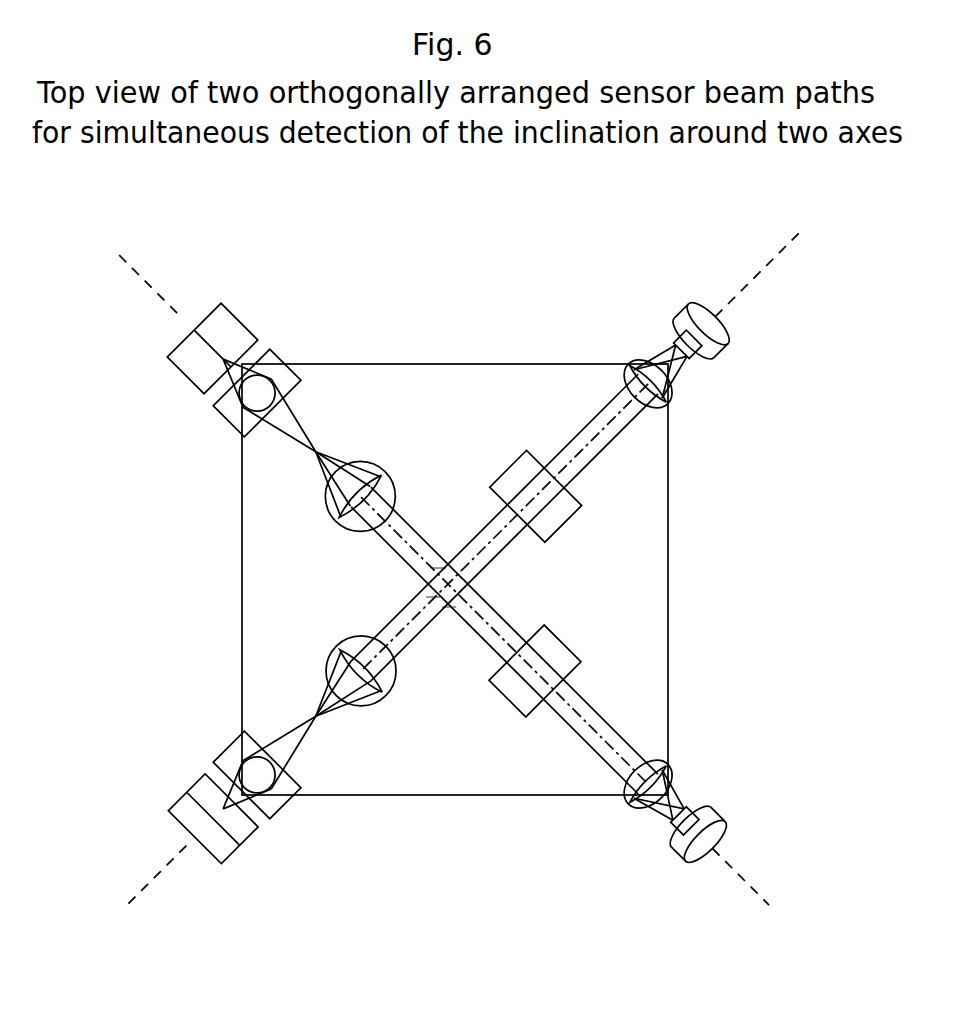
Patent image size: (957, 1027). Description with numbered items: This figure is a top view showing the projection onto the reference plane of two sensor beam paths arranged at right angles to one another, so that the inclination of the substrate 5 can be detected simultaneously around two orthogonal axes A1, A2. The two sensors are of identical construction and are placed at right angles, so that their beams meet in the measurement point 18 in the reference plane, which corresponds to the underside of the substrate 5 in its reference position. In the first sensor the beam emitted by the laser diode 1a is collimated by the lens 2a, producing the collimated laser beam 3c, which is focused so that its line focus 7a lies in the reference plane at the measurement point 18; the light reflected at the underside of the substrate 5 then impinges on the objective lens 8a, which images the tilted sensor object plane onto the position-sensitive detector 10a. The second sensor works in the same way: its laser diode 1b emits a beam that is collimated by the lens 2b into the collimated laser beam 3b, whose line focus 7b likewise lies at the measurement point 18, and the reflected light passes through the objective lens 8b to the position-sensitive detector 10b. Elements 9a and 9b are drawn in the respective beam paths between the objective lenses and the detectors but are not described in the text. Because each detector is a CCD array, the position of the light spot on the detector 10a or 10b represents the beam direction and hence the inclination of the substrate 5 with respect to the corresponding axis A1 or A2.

The laser diode 1a is at (699, 350).
The laser diode 1b is at (705, 816).
The lens 2a is at (661, 393).
The lens 2b is at (664, 784).
The collimated laser beam 3b is at (551, 670).
The collimated laser beam 3c is at (549, 502).
The substrate 5 is at (480, 358).
The line focus 7a is at (438, 567).
The line focus 7b is at (430, 597).
The objective lens 8a is at (351, 681).
The objective lens 8b is at (350, 490).
The aperture / lens holder 9a is at (269, 762).
The aperture / lens holder 9b is at (269, 405).
The position-sensitive detector 10a is at (192, 814).
The position-sensitive detector 10b is at (192, 361).
The measurement point 18 is at (448, 607).
The axis of rotation A1 is at (464, 568).
The axis A2 is at (443, 577).